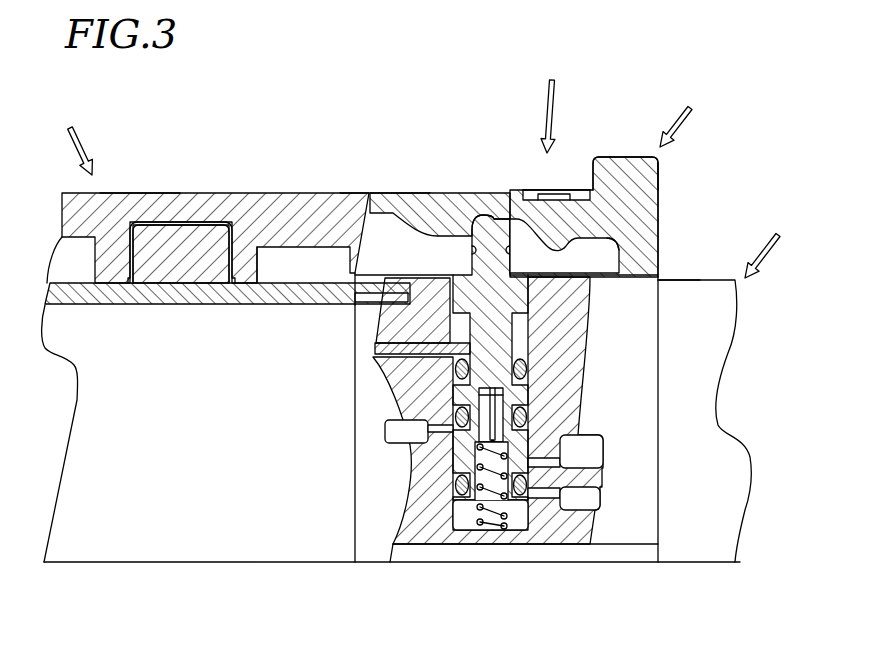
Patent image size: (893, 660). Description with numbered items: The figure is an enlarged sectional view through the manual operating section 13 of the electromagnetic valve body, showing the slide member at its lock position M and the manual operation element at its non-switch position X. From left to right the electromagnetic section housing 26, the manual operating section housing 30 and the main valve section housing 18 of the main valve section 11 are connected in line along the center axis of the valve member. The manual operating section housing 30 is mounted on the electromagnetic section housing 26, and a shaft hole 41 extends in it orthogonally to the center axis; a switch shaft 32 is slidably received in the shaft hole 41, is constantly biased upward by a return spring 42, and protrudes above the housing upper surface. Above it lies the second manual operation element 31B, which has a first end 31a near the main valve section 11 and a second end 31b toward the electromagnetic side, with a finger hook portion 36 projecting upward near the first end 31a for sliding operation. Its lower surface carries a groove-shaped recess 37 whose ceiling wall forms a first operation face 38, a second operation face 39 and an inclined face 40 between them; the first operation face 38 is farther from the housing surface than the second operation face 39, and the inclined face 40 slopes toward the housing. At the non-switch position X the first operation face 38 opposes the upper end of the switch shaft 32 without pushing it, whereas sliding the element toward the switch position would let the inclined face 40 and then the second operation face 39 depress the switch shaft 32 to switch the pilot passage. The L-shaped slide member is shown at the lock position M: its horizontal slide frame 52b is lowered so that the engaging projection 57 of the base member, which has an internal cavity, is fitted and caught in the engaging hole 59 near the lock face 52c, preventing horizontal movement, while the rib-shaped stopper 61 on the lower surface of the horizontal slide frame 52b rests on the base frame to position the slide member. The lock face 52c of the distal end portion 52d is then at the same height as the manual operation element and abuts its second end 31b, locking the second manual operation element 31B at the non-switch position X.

The main valve section 11 is at (733, 243).
The manual operating section 13 is at (556, 122).
The main valve section housing 18 is at (692, 373).
The electromagnetic section housing 26 is at (157, 530).
The manual operating section housing 30 is at (563, 530).
The first end 31a is at (660, 197).
The second end 31b is at (352, 192).
The second manual operation element 31B is at (504, 205).
The switch shaft 32 is at (493, 295).
The finger hook portion 36 is at (621, 177).
The recess 37 is at (437, 250).
The first operation face 38 is at (460, 216).
The second operation face 39 is at (600, 250).
The inclined face 40 is at (578, 235).
The shaft hole 41 is at (467, 523).
The return spring 42 is at (487, 525).
The horizontal slide frame 52b is at (142, 182).
The lock face 52c is at (390, 192).
The distal end portion 52d is at (303, 205).
The engaging projection 57 is at (200, 257).
The engaging hole 59 is at (133, 258).
The stopper 61 is at (253, 285).
The lock position M is at (76, 134).
The non-switch position X is at (683, 109).